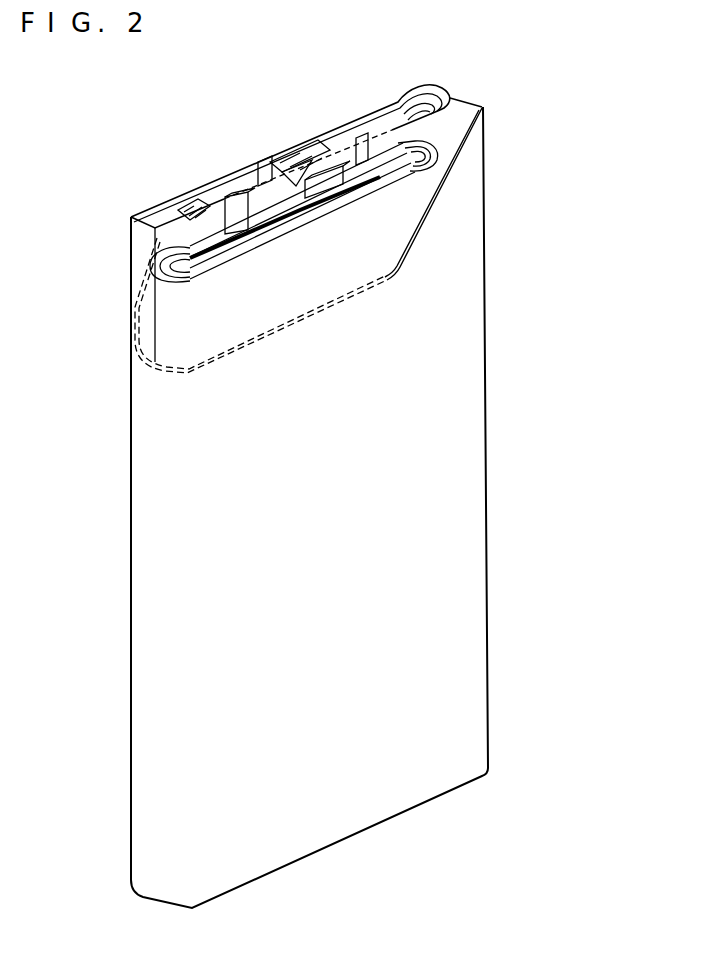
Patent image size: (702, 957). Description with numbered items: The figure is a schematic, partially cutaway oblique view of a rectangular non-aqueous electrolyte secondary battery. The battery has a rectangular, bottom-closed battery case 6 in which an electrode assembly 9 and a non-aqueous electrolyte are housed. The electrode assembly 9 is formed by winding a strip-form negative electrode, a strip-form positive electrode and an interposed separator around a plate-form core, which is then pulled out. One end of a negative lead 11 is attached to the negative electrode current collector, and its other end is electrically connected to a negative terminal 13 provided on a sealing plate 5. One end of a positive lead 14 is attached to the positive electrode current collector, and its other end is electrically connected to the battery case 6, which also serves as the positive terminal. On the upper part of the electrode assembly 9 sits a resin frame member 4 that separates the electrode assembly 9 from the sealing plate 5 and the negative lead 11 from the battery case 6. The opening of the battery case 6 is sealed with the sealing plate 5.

The resin frame member 4 is at (386, 125).
The sealing plate 5 is at (347, 135).
The battery case 6 is at (458, 635).
The electrode assembly 9 is at (307, 298).
The negative lead 11 is at (236, 236).
The negative terminal 13 is at (258, 157).
The positive lead 14 is at (335, 188).